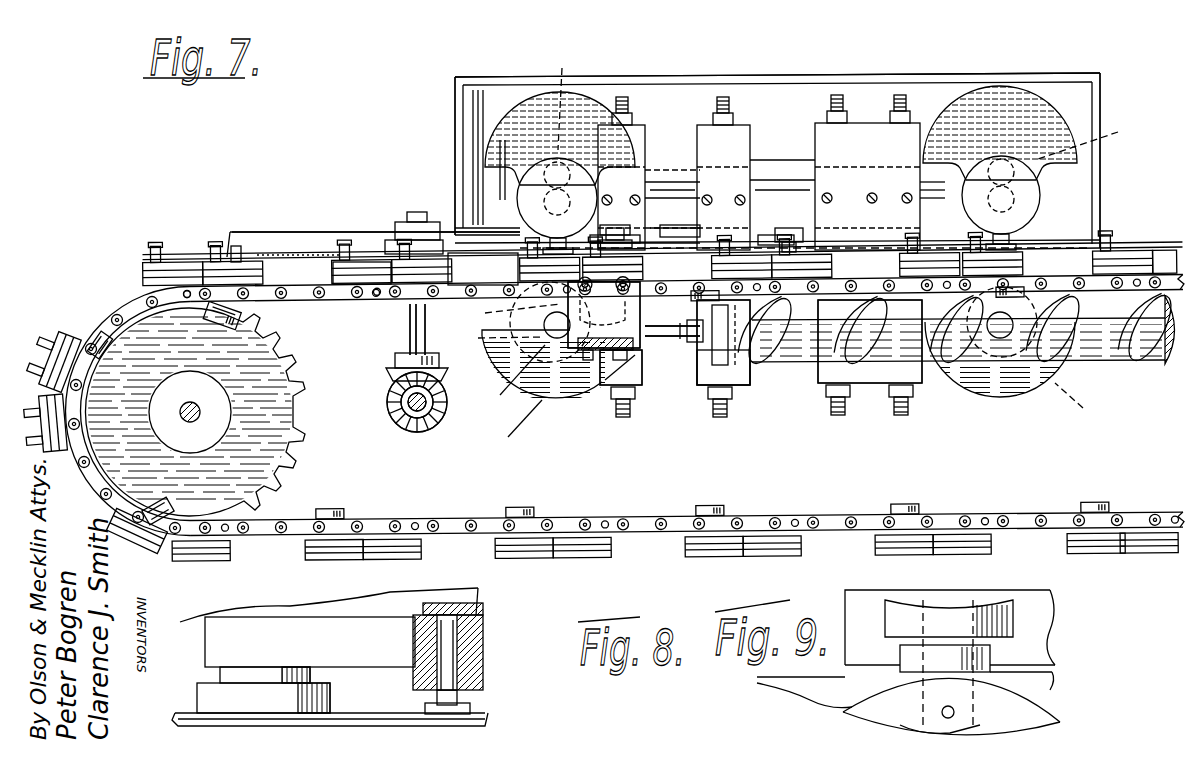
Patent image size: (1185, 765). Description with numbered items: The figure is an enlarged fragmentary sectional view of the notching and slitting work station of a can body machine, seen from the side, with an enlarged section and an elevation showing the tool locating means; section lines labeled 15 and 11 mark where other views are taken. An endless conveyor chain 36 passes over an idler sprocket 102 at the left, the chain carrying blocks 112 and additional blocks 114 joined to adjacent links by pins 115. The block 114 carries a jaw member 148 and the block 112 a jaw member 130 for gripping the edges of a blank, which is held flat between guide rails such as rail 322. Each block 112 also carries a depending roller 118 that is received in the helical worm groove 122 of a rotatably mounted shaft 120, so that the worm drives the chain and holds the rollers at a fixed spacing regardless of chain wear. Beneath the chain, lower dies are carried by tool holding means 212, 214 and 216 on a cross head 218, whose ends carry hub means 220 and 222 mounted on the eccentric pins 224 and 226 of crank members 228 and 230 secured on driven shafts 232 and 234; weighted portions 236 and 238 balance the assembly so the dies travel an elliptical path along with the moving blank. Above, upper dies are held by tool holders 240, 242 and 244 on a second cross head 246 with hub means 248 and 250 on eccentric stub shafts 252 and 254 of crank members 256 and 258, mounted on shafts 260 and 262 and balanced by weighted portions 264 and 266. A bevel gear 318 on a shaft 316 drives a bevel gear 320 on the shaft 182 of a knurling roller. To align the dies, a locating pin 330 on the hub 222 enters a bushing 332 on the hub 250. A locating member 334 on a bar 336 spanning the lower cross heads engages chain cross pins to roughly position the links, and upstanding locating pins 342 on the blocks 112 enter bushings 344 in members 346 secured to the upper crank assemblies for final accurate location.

In FIG. 7, the conveyor chain 36 is at (498, 278).
In FIG. 7, the idler sprocket 102 is at (296, 410).
In FIG. 7, the block 112 is at (215, 262).
In FIG. 8, the block 112 is at (480, 718).
In FIG. 7, the block 114 is at (177, 262).
In FIG. 8, the block 114 is at (350, 702).
In FIG. 7, the pin 115 is at (186, 300).
In FIG. 7, the roller 118 is at (404, 308).
In FIG. 7, the shaft 120 is at (786, 366).
In FIG. 7, the helical worm groove 122 is at (761, 372).
In FIG. 7, the jaw member 130 is at (237, 250).
In FIG. 7, the jaw member 148 is at (355, 256).
In FIG. 7, the shaft 182 is at (409, 339).
In FIG. 7, the tool holding means 212 is at (695, 390).
In FIG. 7, the tool holding means 214 is at (701, 381).
In FIG. 7, the tool holding means 216 is at (916, 379).
In FIG. 7, the cross head 218 is at (678, 336).
In FIG. 9, the cross head 218 is at (840, 690).
In FIG. 7, the hub means 220 is at (518, 416).
In FIG. 7, the hub means 222 is at (1024, 277).
In FIG. 7, the eccentric pin 224 is at (482, 326).
In FIG. 7, the eccentric pin 226 is at (1125, 325).
In FIG. 7, the crank member 228 is at (552, 409).
In FIG. 7, the crank member 230 is at (1002, 403).
In FIG. 7, the shaft 232 is at (475, 351).
In FIG. 7, the shaft 234 is at (1120, 418).
In FIG. 7, the weighted portion 236 is at (505, 453).
In FIG. 7, the weighted portion 238 is at (987, 393).
In FIG. 7, the tool holder 240 is at (687, 111).
In FIG. 7, the tool holder 242 is at (787, 110).
In FIG. 7, the tool holder 244 is at (916, 135).
In FIG. 7, the cross head 246 is at (800, 140).
In FIG. 7, the hub means 248 is at (519, 202).
In FIG. 7, the hub means 250 is at (1033, 190).
In FIG. 7, the eccentric stub shaft 252 is at (545, 210).
In FIG. 7, the eccentric stub shaft 254 is at (1155, 140).
In FIG. 7, the crank member 256 is at (531, 98).
In FIG. 7, the crank member 258 is at (1034, 94).
In FIG. 7, the shaft 260 is at (593, 68).
In FIG. 7, the shaft 262 is at (1000, 156).
In FIG. 7, the weighted portion 264 is at (490, 100).
In FIG. 7, the weighted portion 266 is at (1003, 93).
In FIG. 7, the shaft 316 is at (412, 404).
In FIG. 7, the bevel gear 318 is at (427, 412).
In FIG. 7, the bevel gear 320 is at (387, 378).
In FIG. 7, the guide rail 322 is at (290, 237).
In FIG. 7, the locating pin 330 is at (580, 233).
In FIG. 8, the locating pin 330 is at (265, 688).
In FIG. 9, the locating pin 330 is at (992, 641).
In FIG. 9, the bushing 332 is at (1000, 621).
In FIG. 7, the locating member 334 is at (695, 325).
In FIG. 7, the bar 336 is at (606, 386).
In FIG. 7, the locating pin 342 is at (624, 243).
In FIG. 8, the locating pin 342 is at (457, 697).
In FIG. 7, the bushing 344 is at (772, 240).
In FIG. 8, the bushing 344 is at (484, 636).
In FIG. 7, the member 346 is at (790, 232).
In FIG. 8, the member 346 is at (483, 608).
In FIG. 7, the section line 15 is at (660, 68).
In FIG. 7, the section line 11 is at (908, 235).